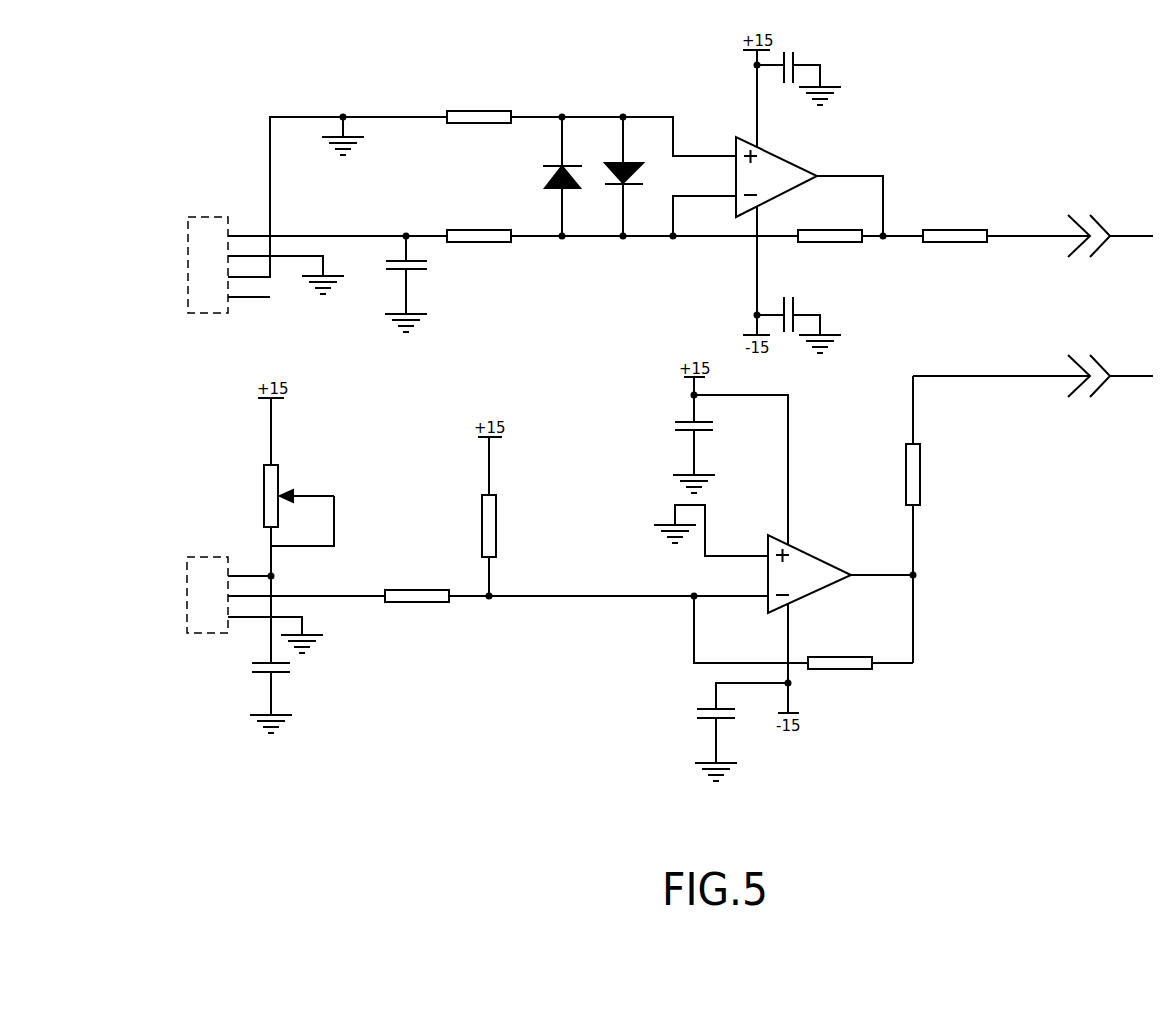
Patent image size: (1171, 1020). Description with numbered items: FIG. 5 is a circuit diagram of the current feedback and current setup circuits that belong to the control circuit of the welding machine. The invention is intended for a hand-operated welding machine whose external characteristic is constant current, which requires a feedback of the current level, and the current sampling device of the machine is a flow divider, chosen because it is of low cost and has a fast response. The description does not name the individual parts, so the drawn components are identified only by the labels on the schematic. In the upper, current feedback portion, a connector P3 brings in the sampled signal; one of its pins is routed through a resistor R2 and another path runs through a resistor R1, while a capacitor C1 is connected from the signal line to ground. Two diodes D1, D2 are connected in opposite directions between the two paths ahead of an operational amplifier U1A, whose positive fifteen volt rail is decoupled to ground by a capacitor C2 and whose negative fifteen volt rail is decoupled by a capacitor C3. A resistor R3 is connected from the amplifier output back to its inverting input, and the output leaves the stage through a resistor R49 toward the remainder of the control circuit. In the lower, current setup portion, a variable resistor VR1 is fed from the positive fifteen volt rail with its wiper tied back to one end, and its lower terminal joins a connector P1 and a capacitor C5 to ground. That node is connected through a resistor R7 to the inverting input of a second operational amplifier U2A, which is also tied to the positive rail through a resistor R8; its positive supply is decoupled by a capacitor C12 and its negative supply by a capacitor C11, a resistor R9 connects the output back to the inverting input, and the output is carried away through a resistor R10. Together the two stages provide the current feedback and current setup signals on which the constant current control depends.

The connector P3 is at (208, 255).
The resistor R1 is at (479, 90).
The resistor R2 is at (479, 208).
The capacitor C1 is at (423, 283).
The diode D1 is at (562, 196).
The diode D2 is at (623, 196).
The operational amplifier U1A is at (778, 176).
The capacitor C2 is at (798, 60).
The capacitor C3 is at (814, 325).
The resistor R3 is at (830, 253).
The resistor R49 is at (954, 212).
The variable resistor VR1 is at (299, 495).
The connector P1 is at (207, 585).
The capacitor C5 is at (284, 698).
The resistor R7 is at (416, 570).
The resistor R8 is at (503, 516).
The capacitor C12 is at (712, 435).
The operational amplifier U2A is at (809, 579).
The resistor R9 is at (840, 677).
The capacitor C11 is at (723, 731).
The resistor R10 is at (936, 519).